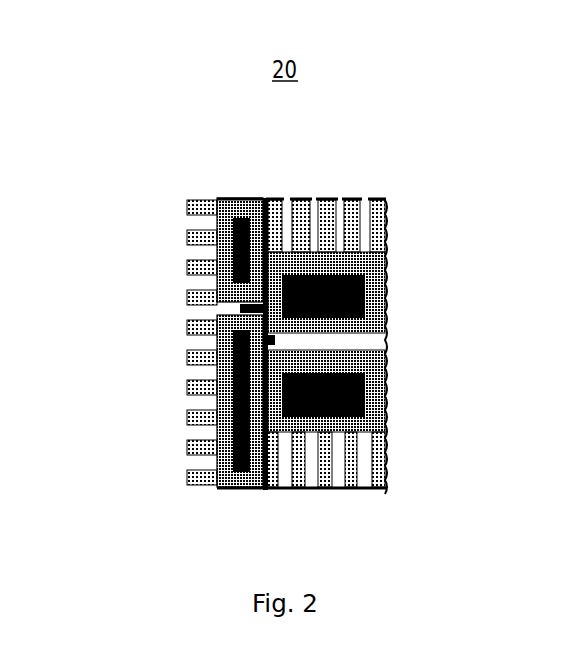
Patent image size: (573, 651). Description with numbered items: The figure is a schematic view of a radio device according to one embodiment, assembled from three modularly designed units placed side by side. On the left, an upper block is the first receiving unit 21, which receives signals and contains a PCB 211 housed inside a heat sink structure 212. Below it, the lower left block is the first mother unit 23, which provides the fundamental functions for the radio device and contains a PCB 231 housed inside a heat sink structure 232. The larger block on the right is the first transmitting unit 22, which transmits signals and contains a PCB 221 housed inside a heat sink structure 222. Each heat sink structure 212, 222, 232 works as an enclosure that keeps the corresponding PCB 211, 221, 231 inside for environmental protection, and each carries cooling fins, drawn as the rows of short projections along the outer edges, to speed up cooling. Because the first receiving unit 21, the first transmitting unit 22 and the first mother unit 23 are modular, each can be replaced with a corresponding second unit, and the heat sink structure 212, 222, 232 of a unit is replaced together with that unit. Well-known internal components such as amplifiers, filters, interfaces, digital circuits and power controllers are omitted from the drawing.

The first receiving unit 21 is at (230, 193).
The PCB 211 is at (238, 269).
The heat sink structure 212 is at (230, 249).
The first transmitting unit 22 is at (392, 195).
The PCB 221 is at (365, 298).
The heat sink structure 222 is at (363, 267).
The first mother unit 23 is at (183, 398).
The PCB 231 is at (234, 455).
The heat sink structure 232 is at (223, 430).